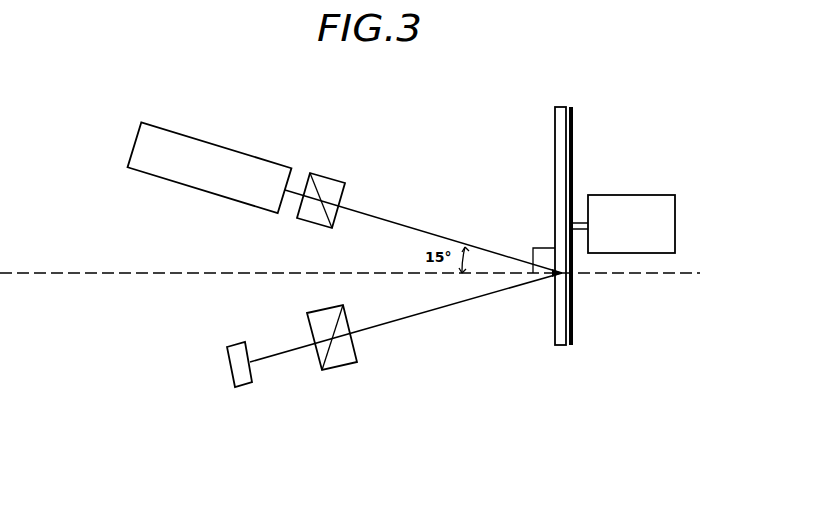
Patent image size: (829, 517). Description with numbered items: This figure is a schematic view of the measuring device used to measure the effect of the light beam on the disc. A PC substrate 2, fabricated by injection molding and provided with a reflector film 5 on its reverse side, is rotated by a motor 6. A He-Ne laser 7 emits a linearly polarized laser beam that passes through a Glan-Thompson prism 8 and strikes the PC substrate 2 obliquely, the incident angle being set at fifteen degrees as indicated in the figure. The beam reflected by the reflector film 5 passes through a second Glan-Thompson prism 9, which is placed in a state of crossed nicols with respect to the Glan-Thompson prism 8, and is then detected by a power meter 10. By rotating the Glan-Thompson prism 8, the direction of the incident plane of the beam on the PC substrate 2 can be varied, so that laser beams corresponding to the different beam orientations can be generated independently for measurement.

The PC substrate 2 is at (555, 128).
The reflector film 5 is at (573, 113).
The motor 6 is at (628, 195).
The He-Ne laser 7 is at (226, 147).
The Glan-Thompson prism 8 is at (330, 173).
The Glan-Thompson prism 9 is at (334, 373).
The power meter 10 is at (238, 388).